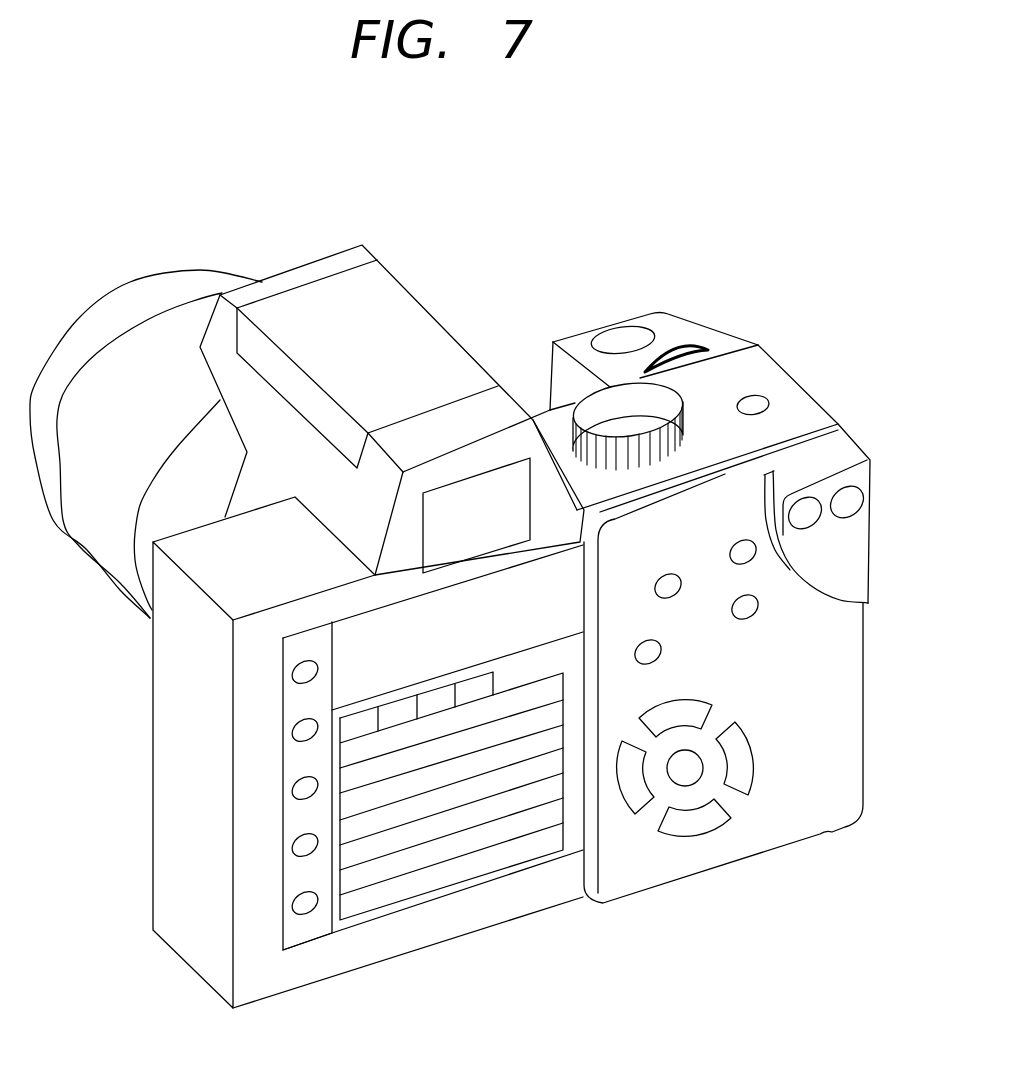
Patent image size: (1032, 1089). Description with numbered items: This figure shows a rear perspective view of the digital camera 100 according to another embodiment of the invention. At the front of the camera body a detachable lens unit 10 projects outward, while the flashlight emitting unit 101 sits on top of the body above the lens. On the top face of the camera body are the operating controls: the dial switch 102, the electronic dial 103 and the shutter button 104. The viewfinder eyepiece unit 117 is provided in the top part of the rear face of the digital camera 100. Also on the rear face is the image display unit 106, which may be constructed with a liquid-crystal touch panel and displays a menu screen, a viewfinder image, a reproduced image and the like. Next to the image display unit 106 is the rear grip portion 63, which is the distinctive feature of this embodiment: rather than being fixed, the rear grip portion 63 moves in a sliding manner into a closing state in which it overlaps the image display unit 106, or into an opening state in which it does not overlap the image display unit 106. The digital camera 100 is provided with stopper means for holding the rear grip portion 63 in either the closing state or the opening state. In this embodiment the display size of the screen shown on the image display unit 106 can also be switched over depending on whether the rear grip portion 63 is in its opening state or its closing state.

The digital camera 100 is at (512, 212).
The detachable lens unit 10 is at (160, 340).
The flashlight emitting unit 101 is at (380, 308).
The dial switch 102 is at (673, 400).
The electronic dial 103 is at (685, 350).
The shutter button 104 is at (615, 340).
The viewfinder eyepiece unit 117 is at (490, 497).
The image display unit 106 is at (455, 883).
The rear grip portion 63 is at (837, 695).